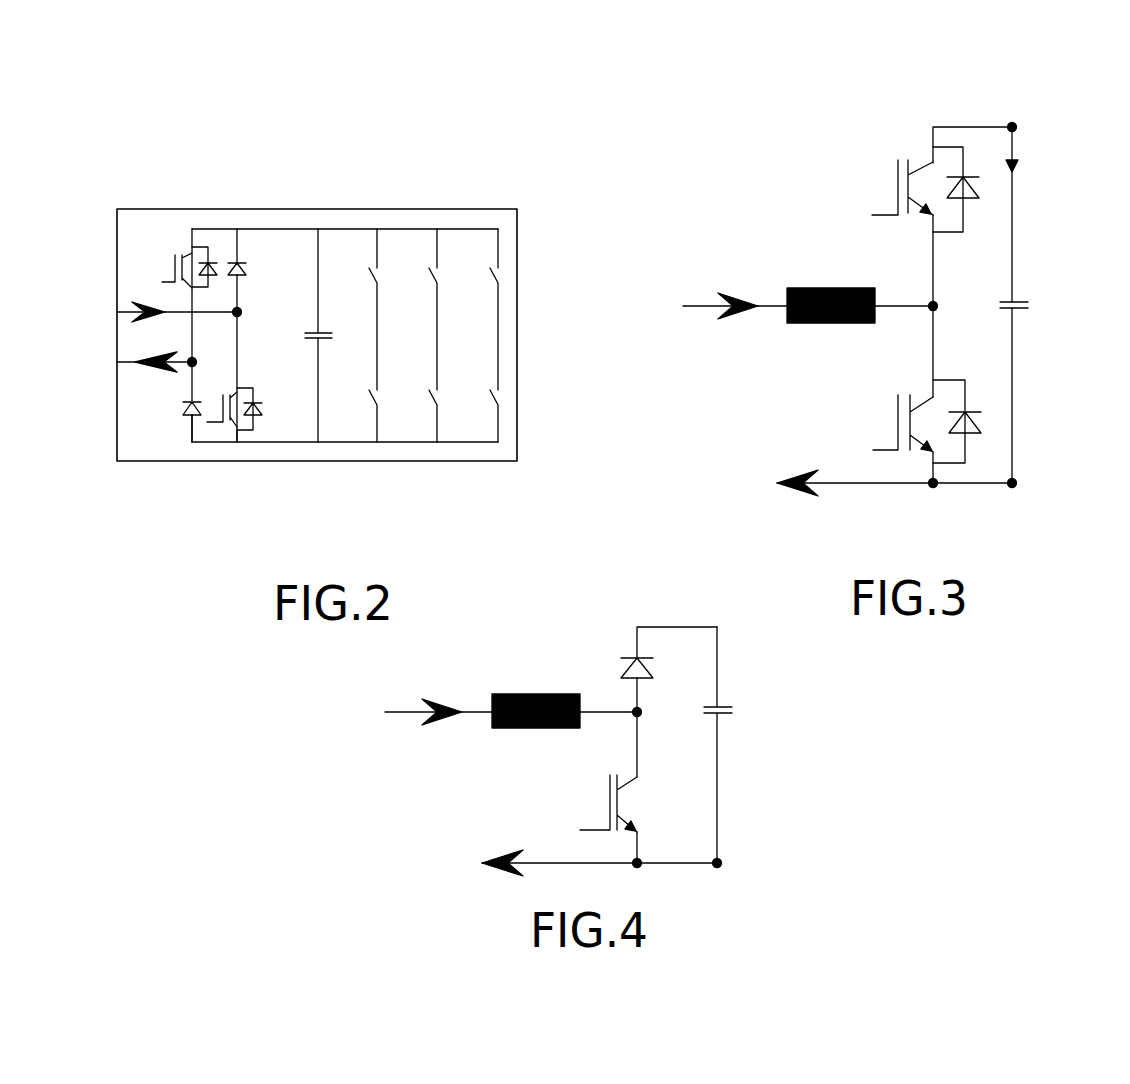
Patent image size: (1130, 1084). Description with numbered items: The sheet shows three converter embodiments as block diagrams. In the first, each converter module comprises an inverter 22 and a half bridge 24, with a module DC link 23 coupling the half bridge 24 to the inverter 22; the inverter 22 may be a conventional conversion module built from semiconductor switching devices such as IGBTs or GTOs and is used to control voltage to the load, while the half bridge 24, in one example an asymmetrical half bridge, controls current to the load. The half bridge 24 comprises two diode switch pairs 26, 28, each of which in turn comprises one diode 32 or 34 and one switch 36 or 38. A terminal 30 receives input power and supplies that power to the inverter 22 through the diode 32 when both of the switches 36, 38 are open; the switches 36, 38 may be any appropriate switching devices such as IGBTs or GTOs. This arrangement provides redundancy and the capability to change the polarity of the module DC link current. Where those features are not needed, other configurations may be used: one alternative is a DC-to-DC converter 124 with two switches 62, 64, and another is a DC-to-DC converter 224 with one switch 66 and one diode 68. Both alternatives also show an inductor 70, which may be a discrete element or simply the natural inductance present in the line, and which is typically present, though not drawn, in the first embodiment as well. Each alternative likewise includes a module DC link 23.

In FIG. 2, the inverter 22 is at (435, 192).
In FIG. 2, the module DC link 23 is at (323, 327).
In FIG. 3, the module DC link 23 is at (1021, 308).
In FIG. 4, the module DC link 23 is at (726, 713).
In FIG. 2, the half bridge 24 is at (244, 193).
In FIG. 2, the diode switch pair 26 is at (194, 458).
In FIG. 2, the diode switch pair 28 is at (238, 454).
In FIG. 2, the terminal 30 is at (237, 312).
In FIG. 2, the diode 32 is at (247, 270).
In FIG. 2, the diode 34 is at (180, 405).
In FIG. 2, the switch 36 is at (272, 405).
In FIG. 2, the switch 38 is at (163, 223).
In FIG. 3, the switch 62 is at (872, 435).
In FIG. 3, the switch 64 is at (862, 195).
In FIG. 4, the switch 66 is at (560, 818).
In FIG. 4, the diode 68 is at (582, 673).
In FIG. 3, the inductor 70 is at (815, 325).
In FIG. 4, the inductor 70 is at (553, 730).
In FIG. 3, the DC-to-DC converter 124 is at (993, 98).
In FIG. 4, the DC-to-DC converter 224 is at (683, 594).